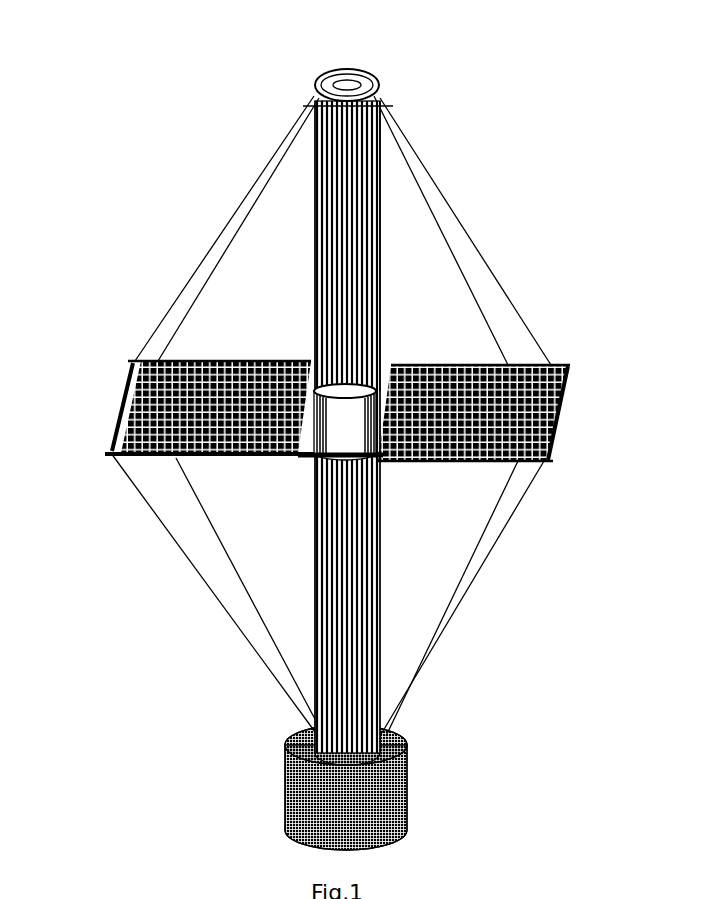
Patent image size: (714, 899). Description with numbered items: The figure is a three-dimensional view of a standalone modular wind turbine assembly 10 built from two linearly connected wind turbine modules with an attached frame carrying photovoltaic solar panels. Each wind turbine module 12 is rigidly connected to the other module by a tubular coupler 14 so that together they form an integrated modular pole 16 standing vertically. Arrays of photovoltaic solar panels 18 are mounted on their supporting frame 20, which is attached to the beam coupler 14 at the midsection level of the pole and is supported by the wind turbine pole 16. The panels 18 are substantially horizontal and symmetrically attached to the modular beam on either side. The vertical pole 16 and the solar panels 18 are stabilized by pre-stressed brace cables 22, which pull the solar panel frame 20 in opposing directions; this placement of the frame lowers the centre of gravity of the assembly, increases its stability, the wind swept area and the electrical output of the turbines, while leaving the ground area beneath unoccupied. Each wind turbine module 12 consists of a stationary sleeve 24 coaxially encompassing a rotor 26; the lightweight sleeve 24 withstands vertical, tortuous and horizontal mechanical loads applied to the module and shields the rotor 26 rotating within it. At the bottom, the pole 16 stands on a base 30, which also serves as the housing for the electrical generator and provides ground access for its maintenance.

The modular wind turbine assembly 10 is at (172, 595).
The wind turbine module 12 is at (325, 292).
The tubular coupler 14 is at (337, 412).
The integrated modular pole 16 is at (380, 214).
The photovoltaic solar panels 18 is at (507, 355).
The supporting frame 20 is at (115, 400).
The brace cables 22 is at (176, 318).
The stationary sleeve 24 is at (317, 85).
The rotor 26 is at (337, 79).
The base 30 is at (400, 736).